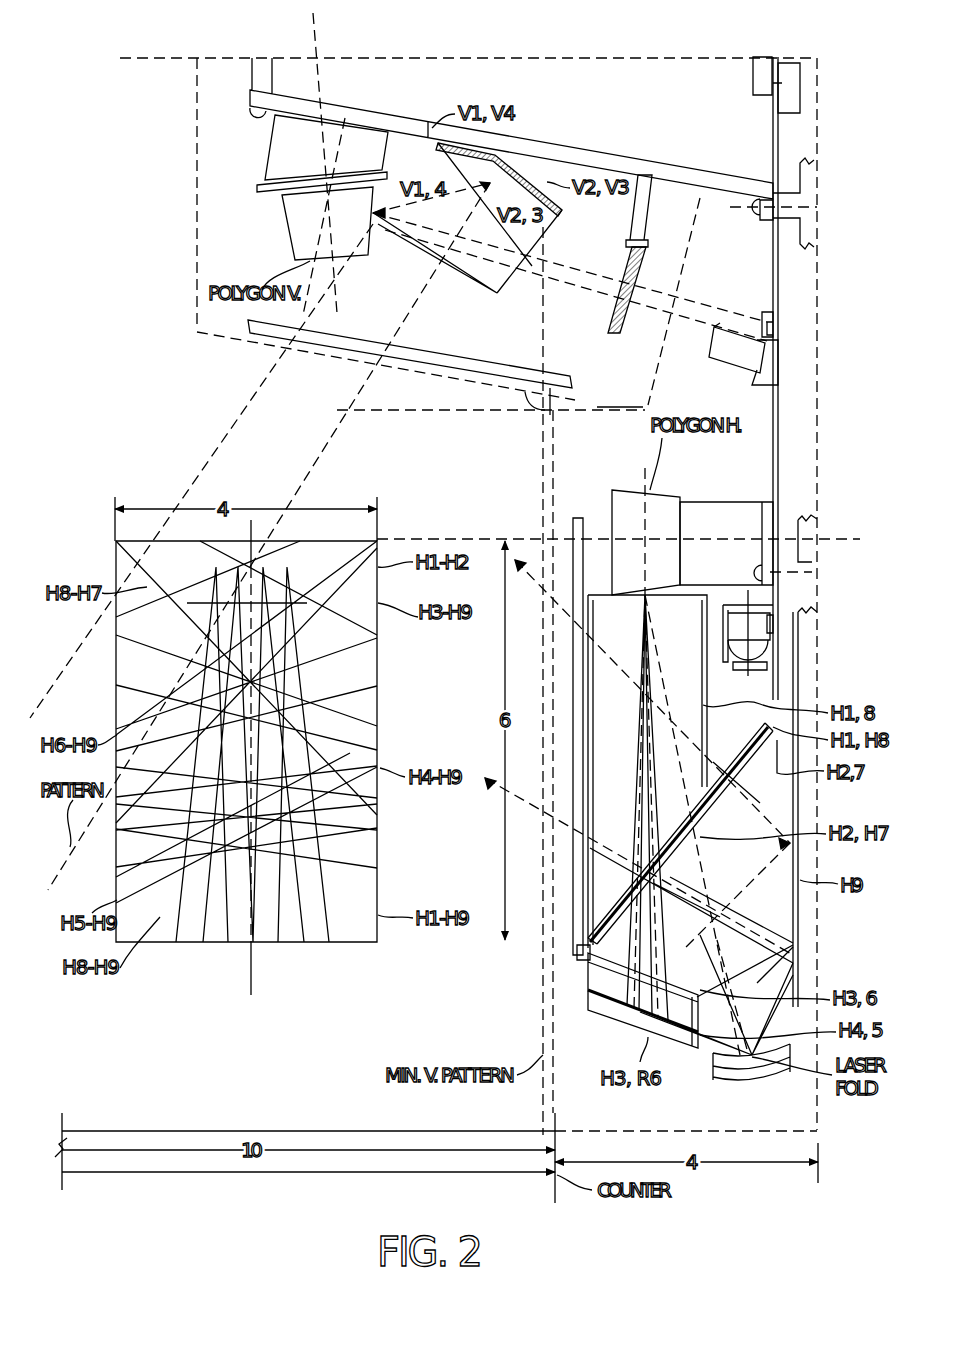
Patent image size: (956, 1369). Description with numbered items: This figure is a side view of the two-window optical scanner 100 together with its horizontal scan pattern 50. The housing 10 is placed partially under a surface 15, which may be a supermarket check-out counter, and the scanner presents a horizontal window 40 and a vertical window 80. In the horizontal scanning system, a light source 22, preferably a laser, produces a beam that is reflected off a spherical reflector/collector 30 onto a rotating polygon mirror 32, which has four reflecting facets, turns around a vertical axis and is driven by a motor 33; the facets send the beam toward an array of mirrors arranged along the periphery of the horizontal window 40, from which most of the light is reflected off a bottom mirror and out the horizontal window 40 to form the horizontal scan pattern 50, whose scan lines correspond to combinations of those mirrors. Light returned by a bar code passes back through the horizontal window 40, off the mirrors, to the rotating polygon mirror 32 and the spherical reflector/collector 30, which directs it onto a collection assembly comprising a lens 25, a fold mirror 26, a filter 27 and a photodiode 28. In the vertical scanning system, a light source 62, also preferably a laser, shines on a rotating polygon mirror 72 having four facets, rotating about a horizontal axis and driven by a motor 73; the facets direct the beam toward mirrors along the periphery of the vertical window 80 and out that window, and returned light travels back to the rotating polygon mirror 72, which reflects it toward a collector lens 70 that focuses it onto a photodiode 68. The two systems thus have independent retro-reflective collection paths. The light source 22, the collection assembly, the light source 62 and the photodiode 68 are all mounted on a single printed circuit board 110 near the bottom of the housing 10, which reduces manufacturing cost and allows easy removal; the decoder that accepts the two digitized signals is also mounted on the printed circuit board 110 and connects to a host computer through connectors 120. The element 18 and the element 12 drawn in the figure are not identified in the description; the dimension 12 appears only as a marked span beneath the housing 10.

The housing 10 is at (600, 57).
The connectors 120 is at (800, 79).
The printed circuit board 110 is at (778, 229).
The motor 73 is at (268, 160).
The rotating polygon mirror 72 is at (290, 235).
The collector lens 70 is at (636, 283).
The photodiode 68 is at (775, 320).
The light source 62 is at (775, 353).
The vertical window 80 is at (492, 352).
The two-window optical scanner 100 is at (106, 416).
The horizontal scan pattern 50 is at (116, 565).
The horizontal window 40 is at (580, 518).
The rotating polygon mirror 32 is at (622, 490).
The motor 33 is at (710, 502).
The fold mirror 26 is at (730, 637).
The filter 27 is at (773, 603).
The photodiode 28 is at (774, 624).
The lens 25 is at (768, 644).
The light source 22 is at (778, 683).
The fold mirror 18 is at (712, 708).
The spherical reflector/collector 30 is at (790, 1068).
The horizontal scan module width 12 is at (188, 1172).
The surface 15 is at (555, 1195).